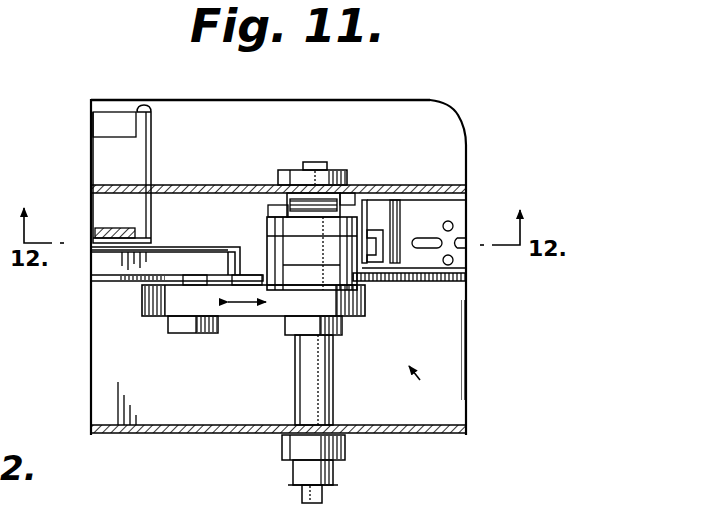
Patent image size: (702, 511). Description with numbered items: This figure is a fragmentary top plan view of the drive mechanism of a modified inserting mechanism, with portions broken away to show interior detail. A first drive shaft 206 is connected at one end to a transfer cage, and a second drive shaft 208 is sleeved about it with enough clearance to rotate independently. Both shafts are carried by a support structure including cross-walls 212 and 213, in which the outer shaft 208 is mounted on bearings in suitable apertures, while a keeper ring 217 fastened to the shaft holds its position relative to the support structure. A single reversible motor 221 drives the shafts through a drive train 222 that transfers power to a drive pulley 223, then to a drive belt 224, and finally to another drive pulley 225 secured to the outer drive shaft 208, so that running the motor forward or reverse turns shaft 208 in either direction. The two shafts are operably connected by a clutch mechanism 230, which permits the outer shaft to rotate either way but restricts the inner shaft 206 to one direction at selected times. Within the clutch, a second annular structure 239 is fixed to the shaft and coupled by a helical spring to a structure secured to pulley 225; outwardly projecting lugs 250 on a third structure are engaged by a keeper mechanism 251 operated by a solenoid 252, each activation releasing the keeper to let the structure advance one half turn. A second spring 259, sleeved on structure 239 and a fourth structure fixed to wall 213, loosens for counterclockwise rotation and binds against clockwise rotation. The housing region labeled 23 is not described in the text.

The housing 23 is at (278, 267).
The first drive shaft 206 is at (322, 162).
The second drive shaft 208 is at (333, 408).
The cross-wall 212 is at (140, 280).
The cross-wall 213 is at (208, 185).
The keeper ring 217 is at (282, 448).
The reversible motor 221 is at (151, 213).
The drive train 222 is at (226, 250).
The drive pulley 223 is at (160, 318).
The drive belt 224 is at (250, 302).
The drive pulley 225 is at (353, 320).
The clutch mechanism 230 is at (427, 384).
The second annular shaped structure 239 is at (346, 210).
The outwardly projecting lugs 250 is at (266, 246).
The keeper mechanism 251 is at (368, 235).
The solenoid 252 is at (455, 204).
The second spring 259 is at (280, 210).